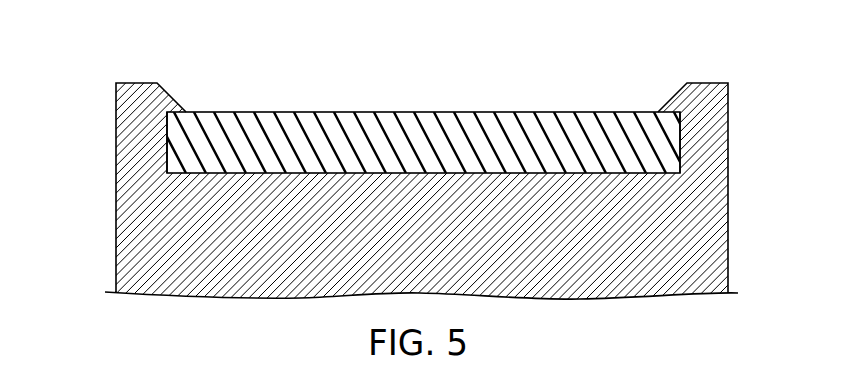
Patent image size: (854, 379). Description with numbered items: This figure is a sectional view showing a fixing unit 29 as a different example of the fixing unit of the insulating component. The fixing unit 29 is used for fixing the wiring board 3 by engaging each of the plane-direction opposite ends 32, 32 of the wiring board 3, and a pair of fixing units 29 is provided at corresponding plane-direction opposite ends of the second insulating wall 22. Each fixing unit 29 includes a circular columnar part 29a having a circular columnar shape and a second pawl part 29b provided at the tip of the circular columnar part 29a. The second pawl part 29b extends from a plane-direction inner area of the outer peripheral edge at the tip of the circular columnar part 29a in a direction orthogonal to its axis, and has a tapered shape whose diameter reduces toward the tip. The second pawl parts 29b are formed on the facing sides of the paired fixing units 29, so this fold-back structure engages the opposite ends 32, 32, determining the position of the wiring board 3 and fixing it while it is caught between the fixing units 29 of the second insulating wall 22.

The second insulating wall 22 is at (713, 252).
The fixing unit 29 is at (424, 133).
The circular columnar part 29a is at (56, 108).
The second pawl part 29b is at (126, 105).
The wiring board 3 is at (404, 133).
The plane-direction opposite end 32 is at (167, 143).